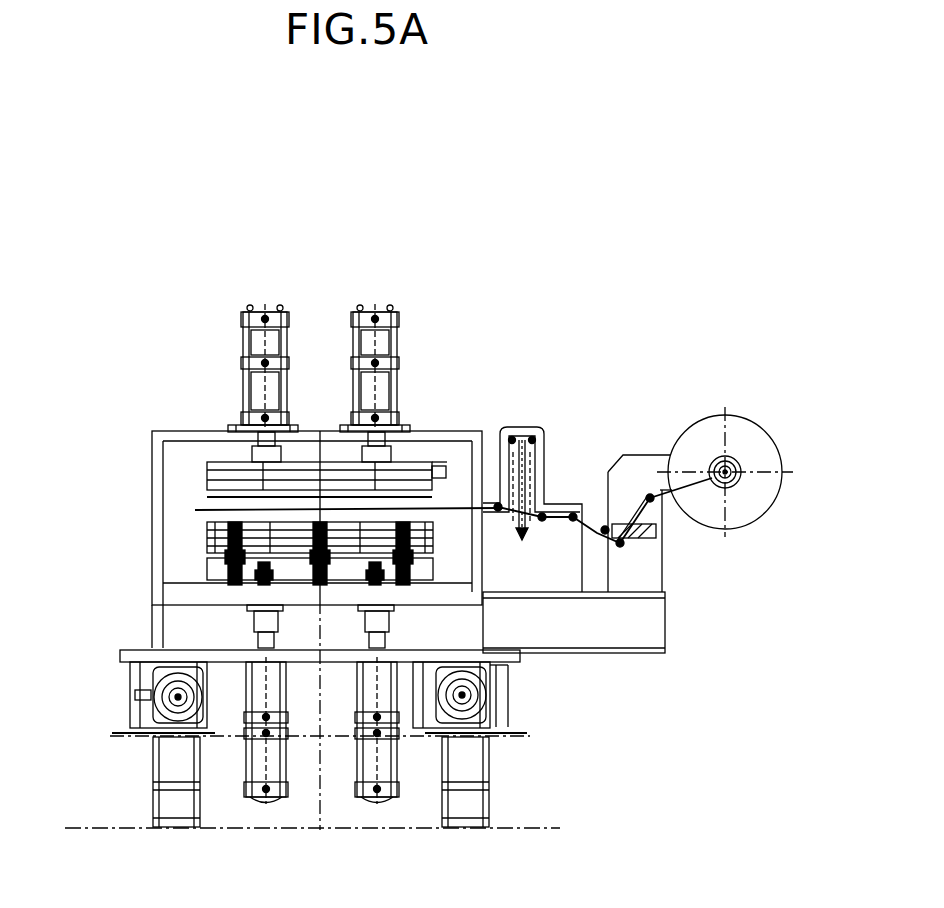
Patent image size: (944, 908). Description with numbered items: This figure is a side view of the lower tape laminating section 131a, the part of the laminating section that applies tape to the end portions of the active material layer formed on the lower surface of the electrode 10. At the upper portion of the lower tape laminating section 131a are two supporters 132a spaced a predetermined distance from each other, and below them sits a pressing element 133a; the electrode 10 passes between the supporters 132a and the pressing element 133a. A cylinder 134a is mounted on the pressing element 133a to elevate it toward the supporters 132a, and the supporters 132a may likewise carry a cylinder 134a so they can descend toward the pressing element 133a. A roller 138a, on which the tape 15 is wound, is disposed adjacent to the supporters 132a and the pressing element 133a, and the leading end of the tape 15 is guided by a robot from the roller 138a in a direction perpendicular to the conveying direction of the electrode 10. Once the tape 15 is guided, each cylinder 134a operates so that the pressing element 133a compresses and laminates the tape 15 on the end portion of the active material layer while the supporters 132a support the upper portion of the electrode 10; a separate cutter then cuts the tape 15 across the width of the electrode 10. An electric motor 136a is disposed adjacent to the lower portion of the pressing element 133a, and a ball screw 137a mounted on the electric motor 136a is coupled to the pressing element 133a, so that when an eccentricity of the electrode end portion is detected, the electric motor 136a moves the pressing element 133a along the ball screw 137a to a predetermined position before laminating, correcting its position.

The lower tape laminating section 131a is at (585, 268).
The supporters 132a is at (414, 440).
The pressing element 133a is at (208, 528).
The cylinder 134a is at (243, 400).
The electrode 10 is at (208, 498).
The tape 15 is at (600, 533).
The electric motor 136a is at (493, 683).
The ball screw 137a is at (493, 716).
The roller 138a is at (733, 458).